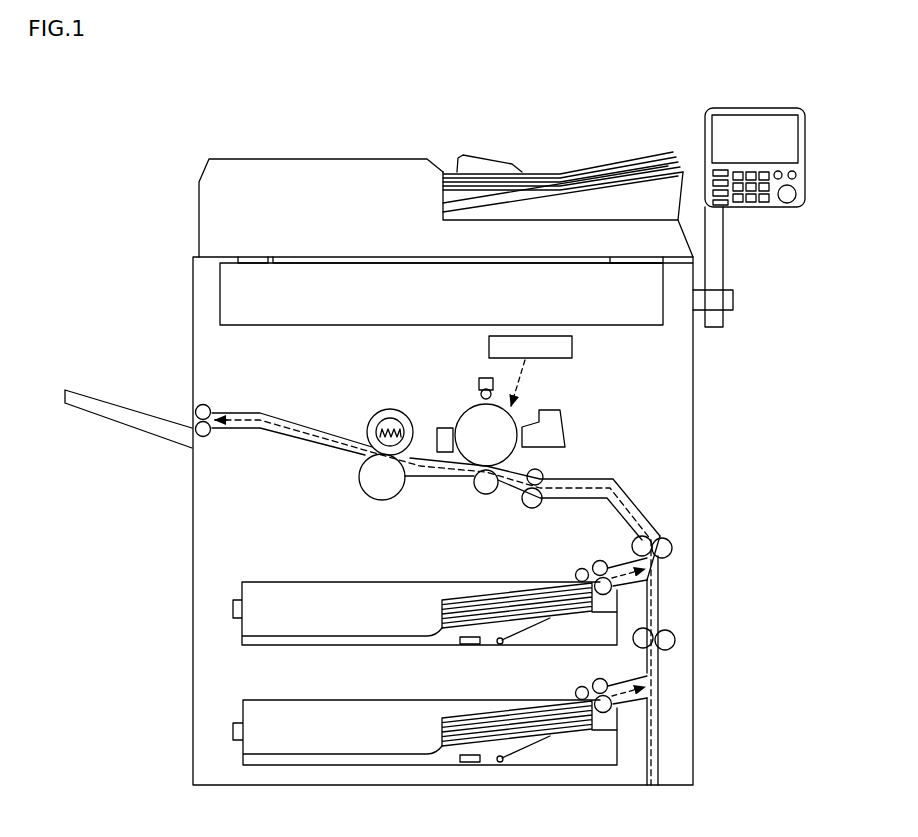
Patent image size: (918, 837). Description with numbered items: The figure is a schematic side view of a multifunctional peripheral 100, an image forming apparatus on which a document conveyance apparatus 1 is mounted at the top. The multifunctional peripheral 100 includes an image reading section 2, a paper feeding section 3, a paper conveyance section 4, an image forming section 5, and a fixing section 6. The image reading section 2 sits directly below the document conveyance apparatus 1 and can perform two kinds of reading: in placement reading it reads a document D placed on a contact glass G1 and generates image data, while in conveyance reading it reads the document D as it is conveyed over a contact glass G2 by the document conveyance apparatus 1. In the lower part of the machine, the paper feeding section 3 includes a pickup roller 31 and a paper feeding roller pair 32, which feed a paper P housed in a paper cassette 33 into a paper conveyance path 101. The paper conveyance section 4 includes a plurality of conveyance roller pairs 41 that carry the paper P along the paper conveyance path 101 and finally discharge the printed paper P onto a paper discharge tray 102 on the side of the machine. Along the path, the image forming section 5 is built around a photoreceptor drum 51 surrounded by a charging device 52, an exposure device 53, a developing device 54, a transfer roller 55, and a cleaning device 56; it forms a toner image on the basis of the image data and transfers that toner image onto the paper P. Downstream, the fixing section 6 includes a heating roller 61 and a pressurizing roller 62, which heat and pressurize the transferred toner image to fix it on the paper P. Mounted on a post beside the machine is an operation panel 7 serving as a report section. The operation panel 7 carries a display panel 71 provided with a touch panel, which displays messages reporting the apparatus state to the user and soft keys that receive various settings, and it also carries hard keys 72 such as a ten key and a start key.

The document conveyance apparatus 1 is at (198, 170).
The multifunctional peripheral 100 is at (192, 257).
The image reading section 2 is at (219, 300).
The paper feeding section 3 is at (396, 646).
The paper conveyance section 4 is at (672, 535).
The image forming section 5 is at (522, 436).
The fixing section 6 is at (353, 453).
The operation panel 7 is at (704, 107).
The display panel 71 is at (745, 120).
The hard keys 72 is at (752, 201).
The pickup roller 31 is at (576, 571).
The paper feeding roller pair 32 is at (597, 561).
The paper cassette 33 is at (335, 582).
The conveyance roller pairs 41 is at (205, 404).
The photoreceptor drum 51 is at (470, 410).
The charging device 52 is at (483, 378).
The exposure device 53 is at (573, 347).
The developing device 54 is at (548, 415).
The transfer roller 55 is at (484, 495).
The cleaning device 56 is at (445, 428).
The heating roller 61 is at (380, 410).
The pressurizing roller 62 is at (384, 500).
The paper conveyance path 101 is at (617, 482).
The paper discharge tray 102 is at (110, 395).
The paper P is at (447, 600).
The document D is at (476, 172).
The contact glass G1 is at (367, 257).
The contact glass G2 is at (252, 257).